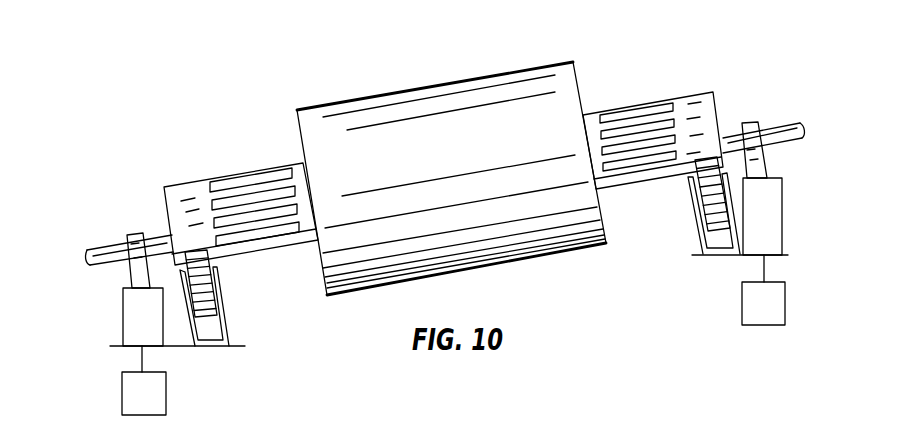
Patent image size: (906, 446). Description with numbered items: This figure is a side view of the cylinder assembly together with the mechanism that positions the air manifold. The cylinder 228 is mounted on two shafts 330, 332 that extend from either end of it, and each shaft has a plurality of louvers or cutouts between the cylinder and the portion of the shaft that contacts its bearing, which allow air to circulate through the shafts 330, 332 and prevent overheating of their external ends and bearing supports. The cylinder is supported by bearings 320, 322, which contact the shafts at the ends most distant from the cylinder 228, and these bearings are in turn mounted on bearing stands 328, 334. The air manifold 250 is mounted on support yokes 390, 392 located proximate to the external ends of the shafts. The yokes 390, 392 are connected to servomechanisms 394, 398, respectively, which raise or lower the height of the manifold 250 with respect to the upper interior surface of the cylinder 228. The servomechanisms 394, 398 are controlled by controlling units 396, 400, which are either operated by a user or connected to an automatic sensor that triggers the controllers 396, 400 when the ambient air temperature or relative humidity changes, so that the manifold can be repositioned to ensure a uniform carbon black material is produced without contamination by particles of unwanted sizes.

The cylinder 228 is at (453, 87).
The air manifold 250 is at (104, 248).
The bearing 320 is at (208, 277).
The bearing 322 is at (703, 200).
The bearing stand 328 is at (228, 320).
The shaft 330 is at (195, 187).
The shaft 332 is at (687, 102).
The bearing stand 334 is at (703, 238).
The support yoke 390 is at (139, 210).
The support yoke 392 is at (744, 122).
The servomechanism 394 is at (133, 306).
The controlling unit 396 is at (158, 388).
The servomechanism 398 is at (775, 197).
The controlling unit 400 is at (750, 300).